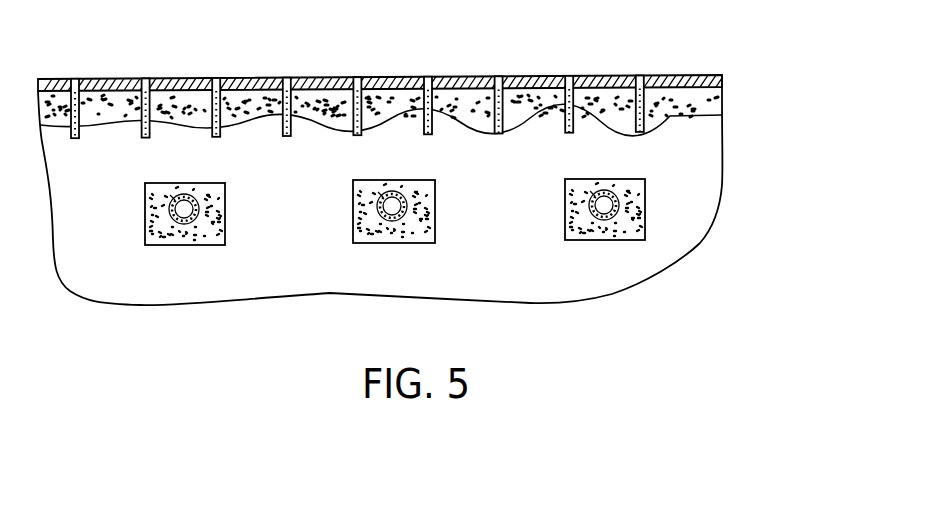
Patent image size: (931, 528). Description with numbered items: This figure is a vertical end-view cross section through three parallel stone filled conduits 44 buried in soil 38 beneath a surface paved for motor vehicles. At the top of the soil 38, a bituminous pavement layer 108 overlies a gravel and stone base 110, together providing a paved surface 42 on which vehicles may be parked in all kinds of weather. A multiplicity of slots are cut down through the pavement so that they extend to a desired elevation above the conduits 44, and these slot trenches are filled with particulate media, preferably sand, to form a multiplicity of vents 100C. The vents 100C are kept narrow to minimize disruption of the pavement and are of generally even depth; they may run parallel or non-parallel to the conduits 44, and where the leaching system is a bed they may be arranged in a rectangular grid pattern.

The soil 38 is at (298, 179).
The paved surface 42 is at (537, 76).
The stone filled conduit 44 is at (210, 246).
The vent 100C is at (355, 76).
The bituminous pavement layer 108 is at (723, 78).
The gravel and stone base 110 is at (723, 100).